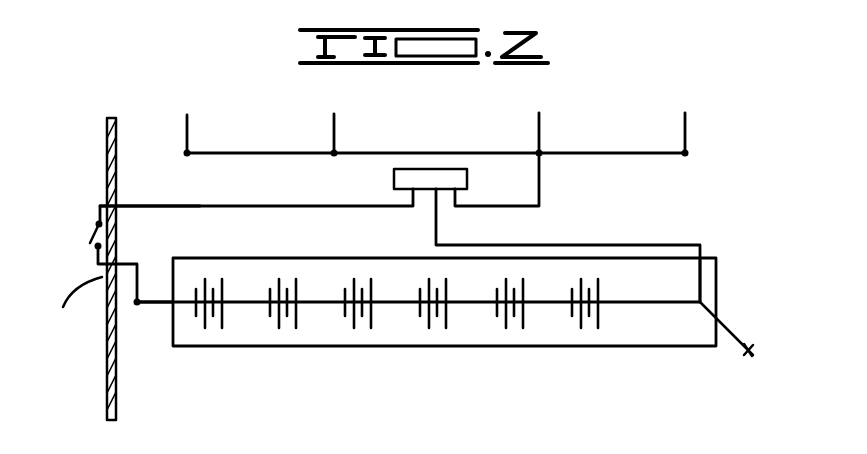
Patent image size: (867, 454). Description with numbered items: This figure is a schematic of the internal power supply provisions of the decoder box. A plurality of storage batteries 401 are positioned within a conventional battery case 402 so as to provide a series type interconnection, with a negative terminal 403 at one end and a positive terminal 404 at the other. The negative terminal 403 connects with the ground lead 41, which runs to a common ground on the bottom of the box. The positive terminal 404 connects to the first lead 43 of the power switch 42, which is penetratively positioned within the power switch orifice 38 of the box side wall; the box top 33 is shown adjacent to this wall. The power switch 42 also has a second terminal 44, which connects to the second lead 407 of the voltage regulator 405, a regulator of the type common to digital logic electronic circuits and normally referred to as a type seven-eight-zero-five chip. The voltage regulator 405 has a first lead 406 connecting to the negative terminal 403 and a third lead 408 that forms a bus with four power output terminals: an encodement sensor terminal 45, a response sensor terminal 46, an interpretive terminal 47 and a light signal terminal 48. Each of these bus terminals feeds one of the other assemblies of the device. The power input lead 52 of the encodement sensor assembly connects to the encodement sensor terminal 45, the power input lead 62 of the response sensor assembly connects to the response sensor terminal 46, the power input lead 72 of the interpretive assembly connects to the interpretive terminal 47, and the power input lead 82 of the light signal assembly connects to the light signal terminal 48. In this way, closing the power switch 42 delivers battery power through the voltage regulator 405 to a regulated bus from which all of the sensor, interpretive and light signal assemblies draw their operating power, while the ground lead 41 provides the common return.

The box top 33 is at (107, 158).
The power input lead 82 is at (187, 130).
The light signal terminal 48 is at (187, 156).
The power input lead 52 is at (334, 130).
The encodement sensor terminal 45 is at (334, 156).
The power input lead 72 is at (539, 136).
The interpretive terminal 47 is at (539, 157).
The power input lead 62 is at (685, 136).
The response sensor terminal 46 is at (685, 156).
The voltage regulator 405 is at (430, 180).
The second lead 407 is at (268, 207).
The third lead 408 is at (530, 206).
The first lead 406 is at (436, 222).
The negative terminal 403 is at (700, 295).
The ground lead 41 is at (735, 345).
The power switch 42 is at (93, 240).
The second terminal 44 is at (130, 206).
The first lead 43 is at (137, 282).
The power switch orifice 38 is at (71, 310).
The positive terminal 404 is at (137, 306).
The battery case 402 is at (200, 258).
The storage batteries 401 is at (270, 310).